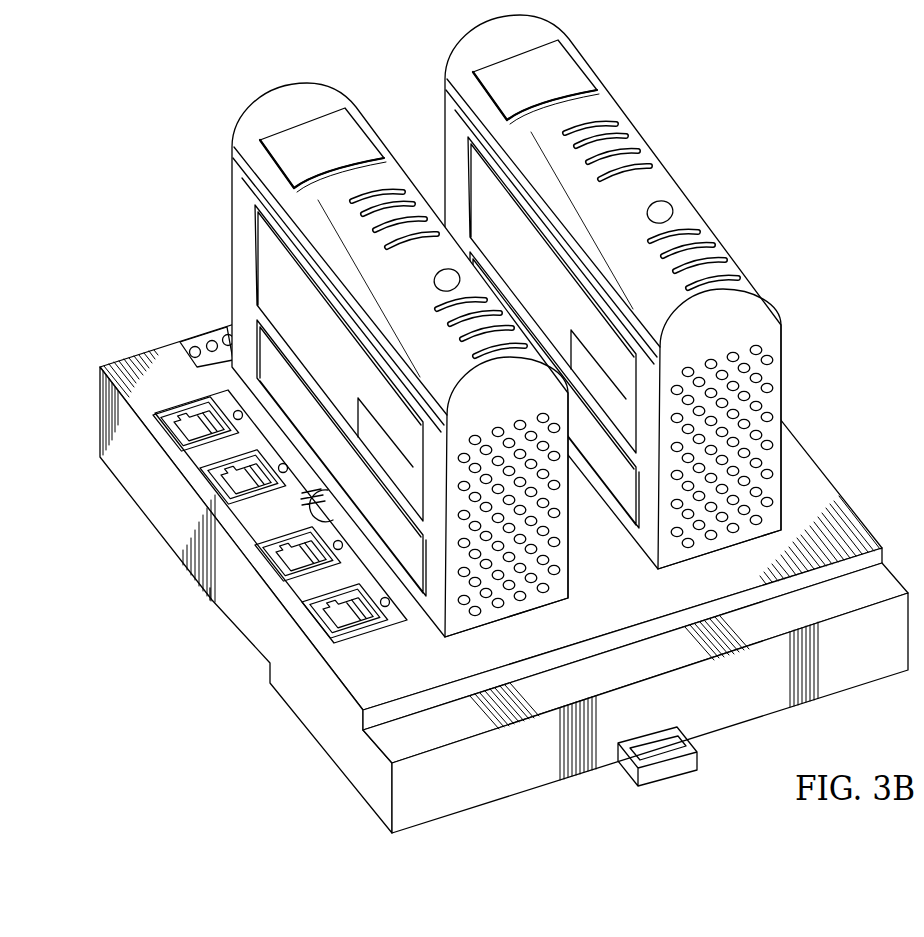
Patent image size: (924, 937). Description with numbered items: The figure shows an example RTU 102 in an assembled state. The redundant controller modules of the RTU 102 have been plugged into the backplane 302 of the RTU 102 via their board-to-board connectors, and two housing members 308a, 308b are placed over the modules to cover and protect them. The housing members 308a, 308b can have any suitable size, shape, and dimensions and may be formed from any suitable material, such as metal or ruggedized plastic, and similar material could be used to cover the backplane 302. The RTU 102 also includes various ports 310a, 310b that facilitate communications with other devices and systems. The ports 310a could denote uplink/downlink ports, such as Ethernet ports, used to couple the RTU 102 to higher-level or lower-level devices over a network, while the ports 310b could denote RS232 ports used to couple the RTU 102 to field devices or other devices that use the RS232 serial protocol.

The RTU 102 is at (486, 424).
The backplane 302 is at (812, 469).
The housing member 308a is at (296, 93).
The housing member 308b is at (666, 184).
The ports 310a is at (308, 611).
The ports 310b is at (228, 490).